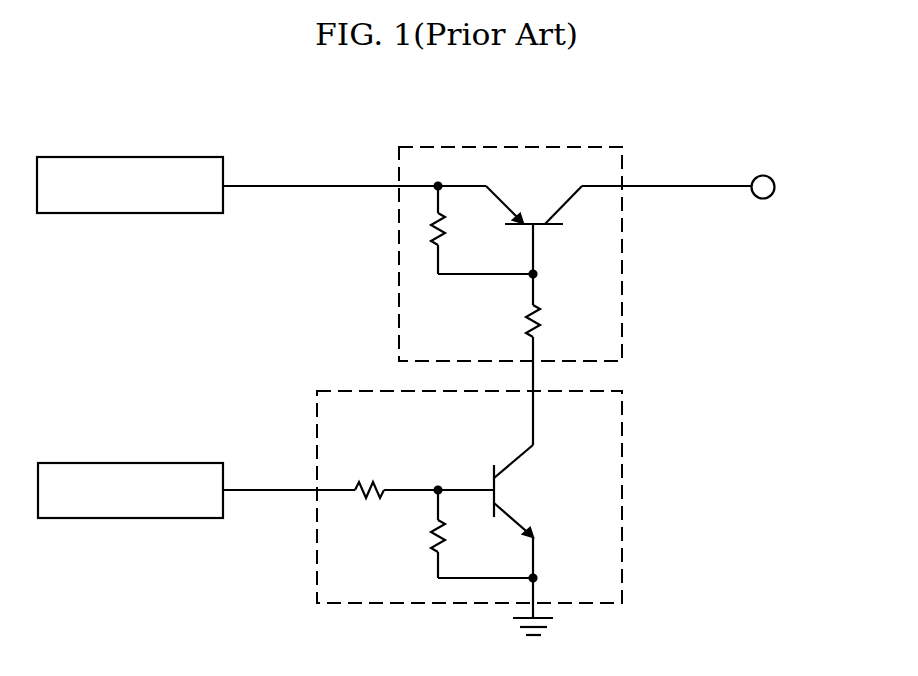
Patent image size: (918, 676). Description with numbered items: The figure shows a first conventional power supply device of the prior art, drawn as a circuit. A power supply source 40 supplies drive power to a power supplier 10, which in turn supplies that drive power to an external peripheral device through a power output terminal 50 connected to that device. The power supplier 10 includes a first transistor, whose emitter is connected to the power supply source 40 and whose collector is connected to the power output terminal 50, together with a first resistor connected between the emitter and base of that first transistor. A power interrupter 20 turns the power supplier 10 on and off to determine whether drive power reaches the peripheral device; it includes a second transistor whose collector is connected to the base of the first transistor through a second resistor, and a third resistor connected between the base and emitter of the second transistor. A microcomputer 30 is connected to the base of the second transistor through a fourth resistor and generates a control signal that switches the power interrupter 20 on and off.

The power supplier 10 is at (623, 252).
The power interrupter 20 is at (623, 495).
The microcomputer 30 is at (133, 518).
The power supply source 40 is at (122, 213).
The power output terminal 50 is at (775, 187).